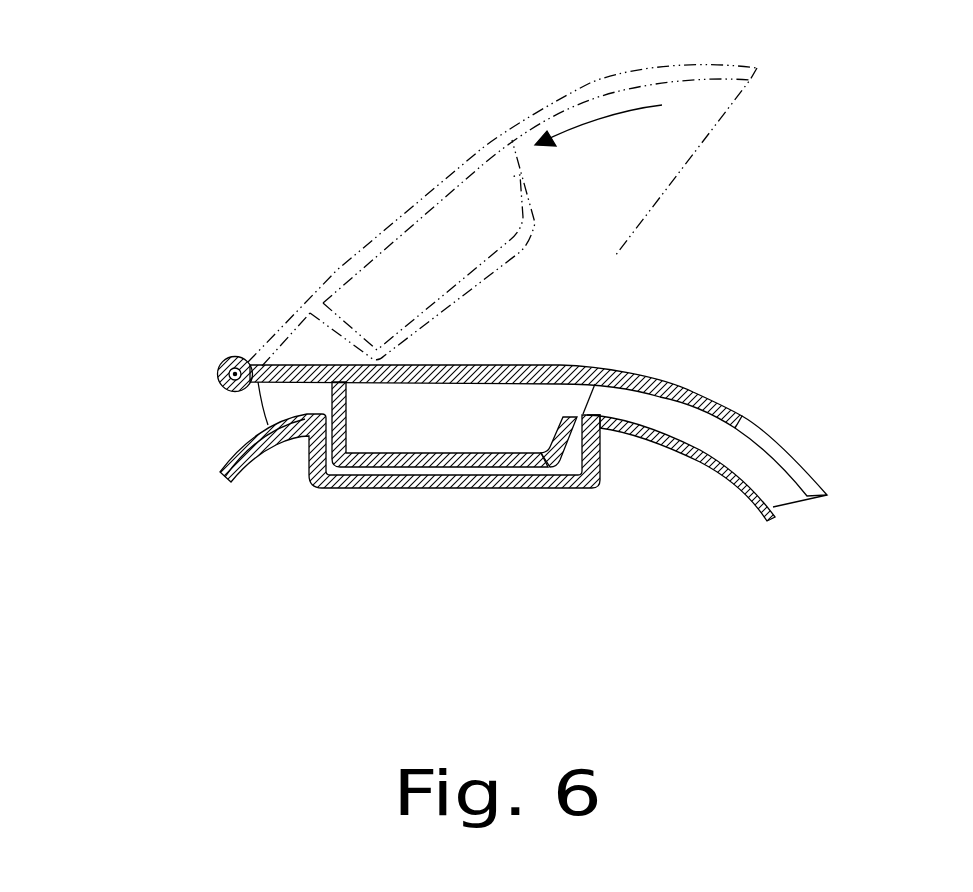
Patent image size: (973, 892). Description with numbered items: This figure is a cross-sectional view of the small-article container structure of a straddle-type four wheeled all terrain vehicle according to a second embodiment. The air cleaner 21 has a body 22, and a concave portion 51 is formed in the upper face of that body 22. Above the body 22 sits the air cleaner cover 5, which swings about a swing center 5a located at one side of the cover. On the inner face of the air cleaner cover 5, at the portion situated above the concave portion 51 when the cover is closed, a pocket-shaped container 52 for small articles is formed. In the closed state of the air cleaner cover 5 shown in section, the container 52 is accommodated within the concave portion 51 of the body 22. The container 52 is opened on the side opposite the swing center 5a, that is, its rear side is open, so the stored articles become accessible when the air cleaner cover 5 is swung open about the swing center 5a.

The air cleaner cover 5 is at (666, 381).
The swing center 5a is at (217, 377).
The concave portion 51 is at (323, 451).
The container 52 is at (557, 420).
The air cleaner 21 is at (737, 468).
The body 22 is at (707, 450).